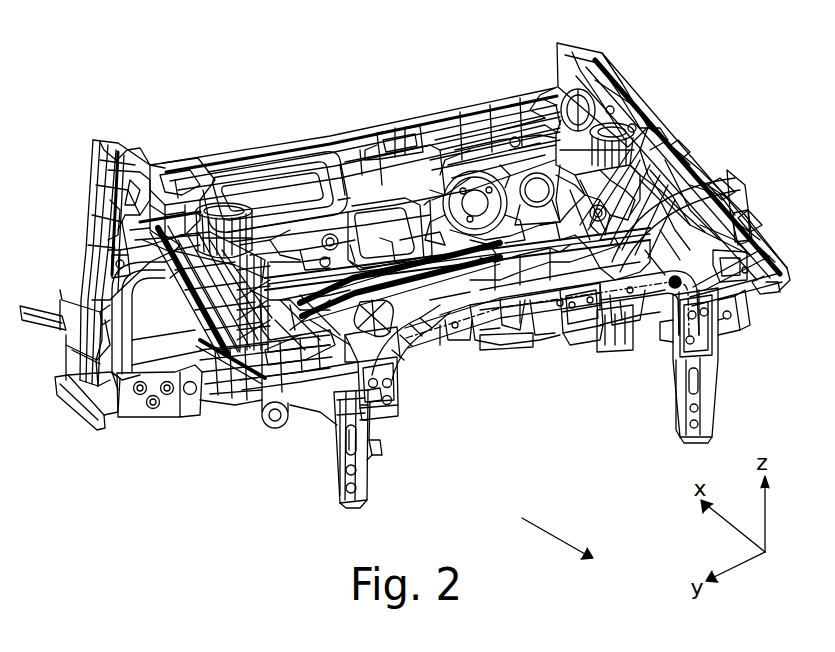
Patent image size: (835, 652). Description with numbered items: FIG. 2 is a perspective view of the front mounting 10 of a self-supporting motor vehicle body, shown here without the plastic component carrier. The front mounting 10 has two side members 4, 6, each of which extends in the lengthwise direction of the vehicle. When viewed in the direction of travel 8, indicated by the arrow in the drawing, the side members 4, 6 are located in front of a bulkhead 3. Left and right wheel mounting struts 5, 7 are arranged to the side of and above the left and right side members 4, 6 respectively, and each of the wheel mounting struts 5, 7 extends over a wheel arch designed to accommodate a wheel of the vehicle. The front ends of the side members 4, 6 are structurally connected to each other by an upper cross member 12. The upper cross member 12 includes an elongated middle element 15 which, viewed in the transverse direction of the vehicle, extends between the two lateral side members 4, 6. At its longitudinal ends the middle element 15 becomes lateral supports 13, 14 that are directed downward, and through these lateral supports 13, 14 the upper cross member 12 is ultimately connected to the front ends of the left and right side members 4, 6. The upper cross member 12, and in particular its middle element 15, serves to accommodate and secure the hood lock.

The front mounting 10 is at (270, 118).
The bulkhead 3 is at (340, 167).
The right wheel mounting strut 7 is at (173, 200).
The left wheel mounting strut 5 is at (645, 102).
The lateral support 14 is at (687, 267).
The side member 4 is at (717, 340).
The middle element 15 is at (572, 312).
The lateral support 13 is at (397, 367).
The upper cross member 12 is at (505, 365).
The side member 6 is at (378, 455).
The direction of travel 8 is at (555, 532).